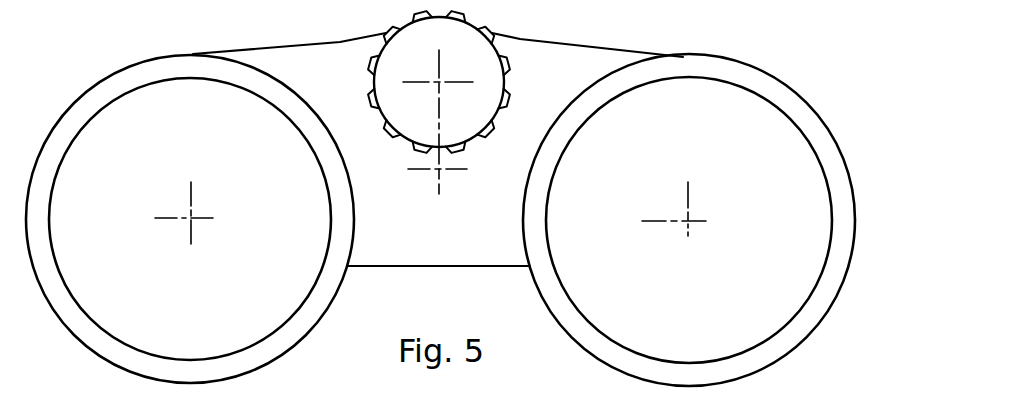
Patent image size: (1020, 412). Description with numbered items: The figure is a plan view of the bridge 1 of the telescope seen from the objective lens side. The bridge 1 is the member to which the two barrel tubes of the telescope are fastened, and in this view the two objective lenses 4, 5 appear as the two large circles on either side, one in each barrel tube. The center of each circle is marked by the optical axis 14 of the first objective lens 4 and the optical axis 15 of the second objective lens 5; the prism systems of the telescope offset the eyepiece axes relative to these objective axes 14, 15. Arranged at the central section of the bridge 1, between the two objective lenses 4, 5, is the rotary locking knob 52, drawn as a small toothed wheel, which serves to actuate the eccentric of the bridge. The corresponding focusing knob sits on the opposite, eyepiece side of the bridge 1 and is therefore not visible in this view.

The bridge 1 is at (363, 255).
The objective lens 4 is at (278, 291).
The objective lens 5 is at (603, 304).
The optical axis 14 is at (192, 216).
The optical axis 15 is at (690, 218).
The rotary locking knob 52 is at (465, 120).